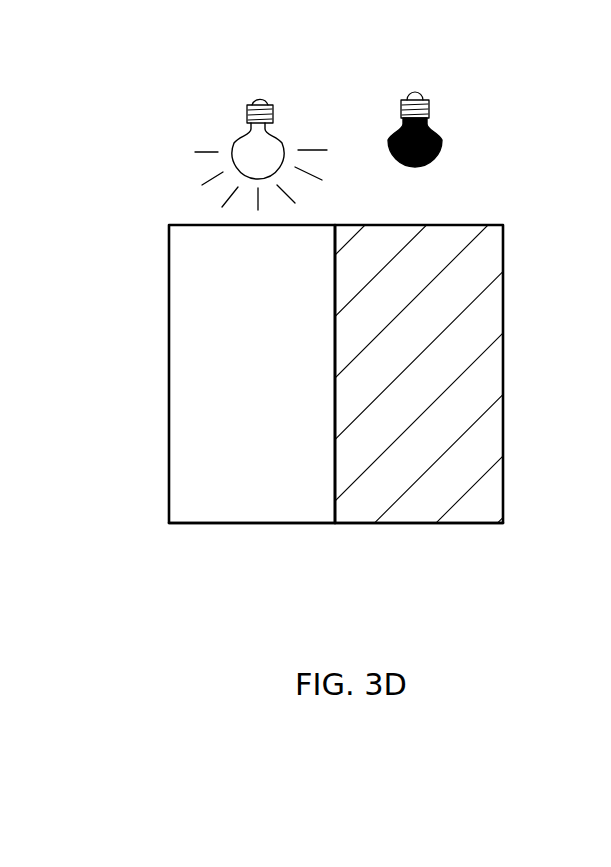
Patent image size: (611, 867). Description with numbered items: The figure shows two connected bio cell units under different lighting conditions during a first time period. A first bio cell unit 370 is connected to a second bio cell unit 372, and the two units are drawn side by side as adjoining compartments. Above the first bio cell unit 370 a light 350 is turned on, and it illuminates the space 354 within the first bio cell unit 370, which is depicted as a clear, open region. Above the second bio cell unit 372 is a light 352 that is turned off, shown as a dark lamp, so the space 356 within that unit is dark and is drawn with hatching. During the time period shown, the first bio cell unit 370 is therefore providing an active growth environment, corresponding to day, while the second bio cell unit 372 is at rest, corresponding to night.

The light 350 is at (252, 142).
The light 352 is at (393, 130).
The space 354 is at (187, 353).
The space 356 is at (493, 371).
The first bio cell unit 370 is at (235, 524).
The second bio cell unit 372 is at (390, 524).